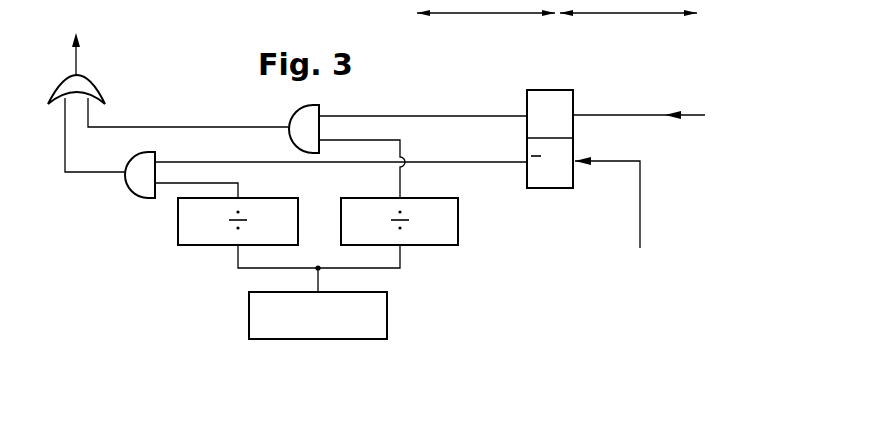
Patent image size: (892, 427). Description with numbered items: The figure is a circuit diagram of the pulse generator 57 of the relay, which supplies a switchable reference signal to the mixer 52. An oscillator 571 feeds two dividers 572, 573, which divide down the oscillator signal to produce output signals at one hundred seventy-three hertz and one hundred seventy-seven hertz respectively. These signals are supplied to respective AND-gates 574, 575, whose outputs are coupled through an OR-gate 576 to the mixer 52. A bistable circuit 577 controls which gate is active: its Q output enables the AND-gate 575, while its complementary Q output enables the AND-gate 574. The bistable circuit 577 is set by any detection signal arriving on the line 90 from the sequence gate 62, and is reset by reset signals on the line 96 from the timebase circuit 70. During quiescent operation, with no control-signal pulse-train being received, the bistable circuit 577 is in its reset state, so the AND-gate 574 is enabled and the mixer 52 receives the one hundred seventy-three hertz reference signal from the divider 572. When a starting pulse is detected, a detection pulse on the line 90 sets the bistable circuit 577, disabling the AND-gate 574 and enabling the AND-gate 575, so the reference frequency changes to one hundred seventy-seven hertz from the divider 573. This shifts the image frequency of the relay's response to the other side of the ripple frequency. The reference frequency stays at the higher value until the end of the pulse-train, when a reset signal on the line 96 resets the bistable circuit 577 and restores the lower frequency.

The mixer 52 is at (75, 43).
The pulse generator 57 is at (188, 291).
The sequence gate 62 is at (729, 117).
The timebase circuit 70 is at (635, 274).
The line 90 is at (645, 116).
The line 96 is at (641, 210).
The oscillator 571 is at (388, 320).
The divider 572 is at (181, 227).
The divider 573 is at (458, 237).
The AND-gate 574 is at (128, 165).
The AND-gate 575 is at (299, 110).
The OR-gate 576 is at (98, 83).
The bistable circuit 577 is at (538, 90).